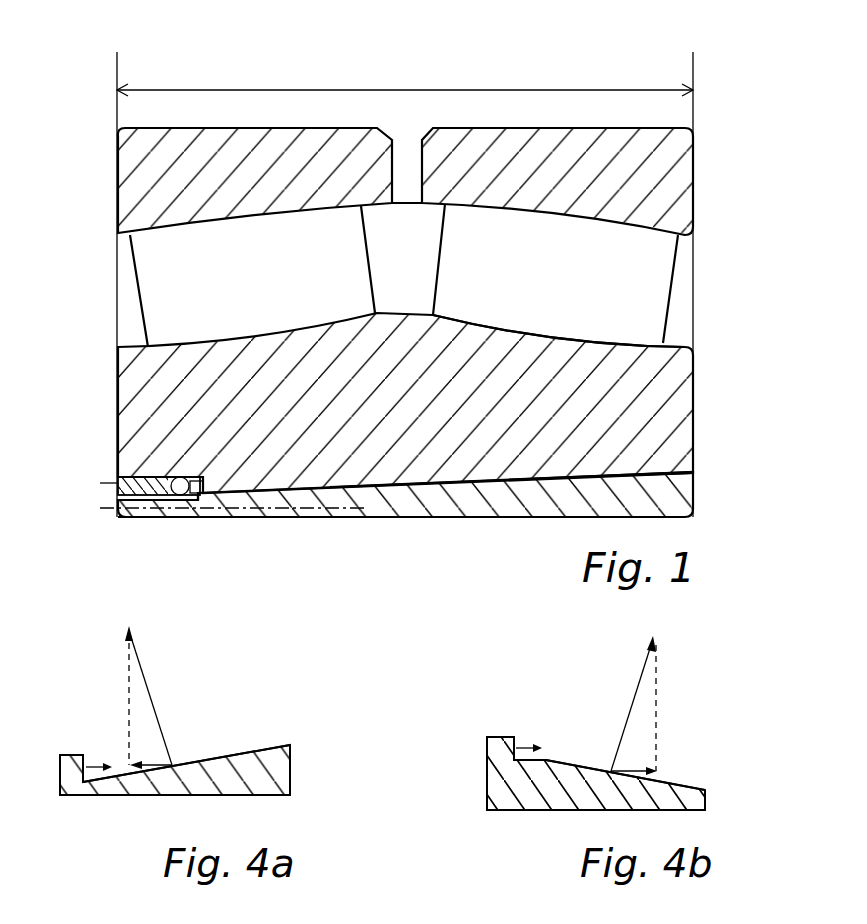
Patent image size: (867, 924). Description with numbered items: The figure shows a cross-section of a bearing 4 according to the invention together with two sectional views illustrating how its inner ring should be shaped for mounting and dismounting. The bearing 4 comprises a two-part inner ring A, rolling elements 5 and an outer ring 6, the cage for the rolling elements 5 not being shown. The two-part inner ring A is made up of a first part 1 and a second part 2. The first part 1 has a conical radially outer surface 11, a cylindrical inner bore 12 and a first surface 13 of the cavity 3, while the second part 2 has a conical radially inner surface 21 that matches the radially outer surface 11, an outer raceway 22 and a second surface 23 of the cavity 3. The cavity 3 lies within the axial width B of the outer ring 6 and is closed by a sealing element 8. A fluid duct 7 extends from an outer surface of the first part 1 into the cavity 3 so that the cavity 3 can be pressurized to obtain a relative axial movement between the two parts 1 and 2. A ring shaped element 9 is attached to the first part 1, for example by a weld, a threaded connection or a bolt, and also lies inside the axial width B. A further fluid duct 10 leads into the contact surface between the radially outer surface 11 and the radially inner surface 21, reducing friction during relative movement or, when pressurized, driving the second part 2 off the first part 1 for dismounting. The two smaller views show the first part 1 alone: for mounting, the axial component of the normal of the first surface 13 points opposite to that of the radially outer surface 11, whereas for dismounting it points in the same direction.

In FIG. 1, the first part 1 is at (435, 527).
In FIG. 4A, the first part 1 is at (197, 710).
In FIG. 4B, the first part 1 is at (643, 724).
In FIG. 1, the second part 2 is at (440, 389).
In FIG. 1, the cavity 3 is at (203, 529).
In FIG. 1, the bearing 4 is at (400, 274).
In FIG. 1, the rolling elements 5 is at (155, 280).
In FIG. 1, the outer ring 6 is at (117, 147).
In FIG. 1, the fluid duct 7 is at (143, 517).
In FIG. 1, the sealing element 8 is at (184, 494).
In FIG. 1, the ring shaped element 9 is at (118, 483).
In FIG. 1, the fluid duct 10 is at (330, 518).
In FIG. 1, the radially outer surface 11 is at (427, 488).
In FIG. 4A, the radially outer surface 11 is at (217, 755).
In FIG. 4B, the radially outer surface 11 is at (670, 783).
In FIG. 1, the inner bore 12 is at (487, 518).
In FIG. 1, the first surface 13 is at (178, 502).
In FIG. 4A, the first surface 13 is at (98, 754).
In FIG. 4B, the first surface 13 is at (514, 737).
In FIG. 1, the radially inner surface 21 is at (605, 474).
In FIG. 1, the outer raceway 22 is at (623, 342).
In FIG. 1, the second surface 23 is at (210, 491).
In FIG. 1, the two-part inner ring A is at (117, 437).
In FIG. 1, the axial width B is at (405, 78).